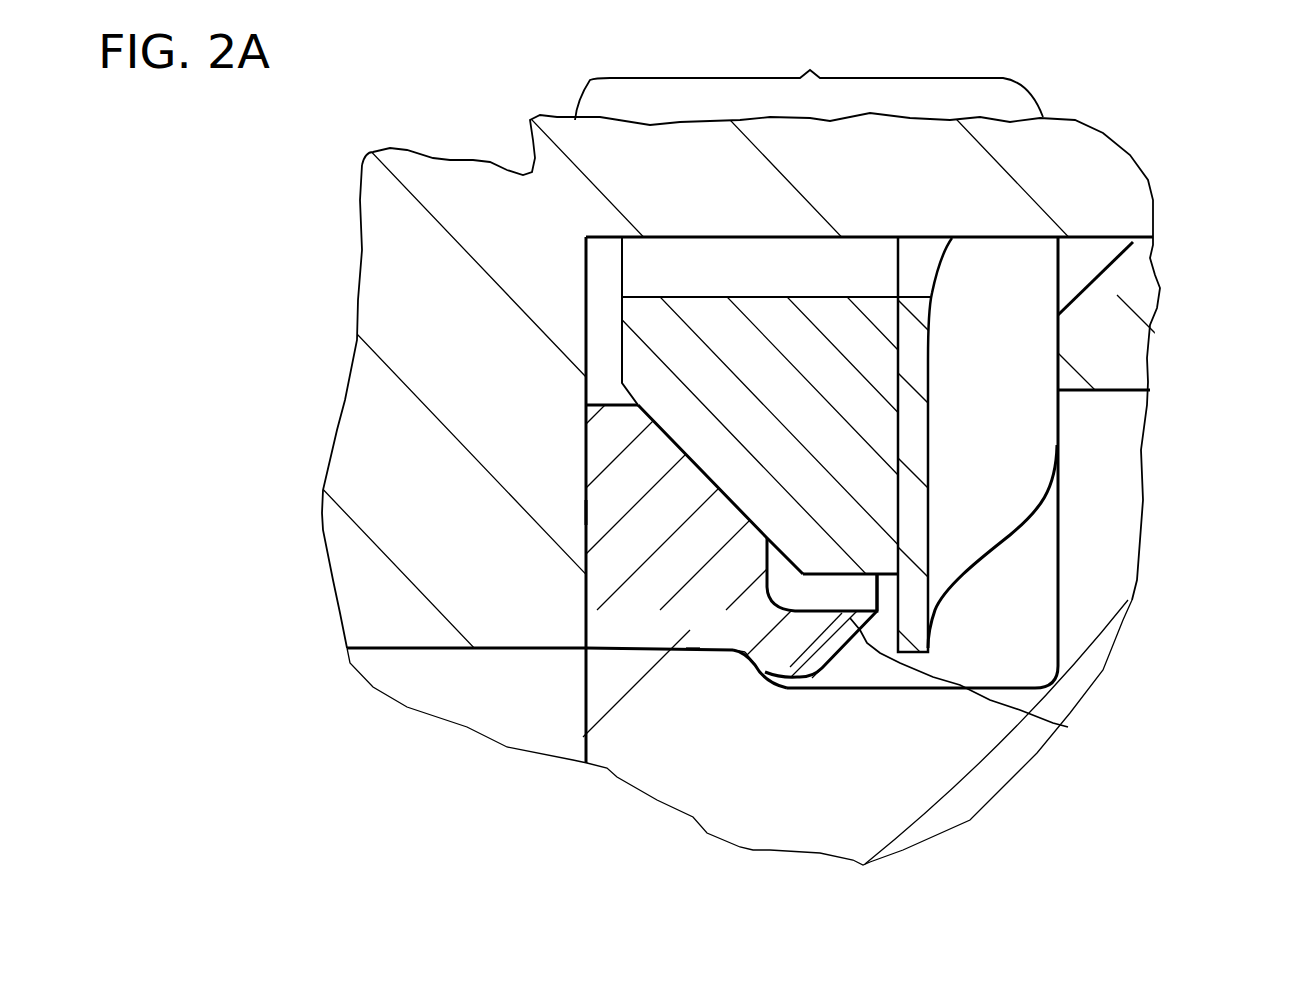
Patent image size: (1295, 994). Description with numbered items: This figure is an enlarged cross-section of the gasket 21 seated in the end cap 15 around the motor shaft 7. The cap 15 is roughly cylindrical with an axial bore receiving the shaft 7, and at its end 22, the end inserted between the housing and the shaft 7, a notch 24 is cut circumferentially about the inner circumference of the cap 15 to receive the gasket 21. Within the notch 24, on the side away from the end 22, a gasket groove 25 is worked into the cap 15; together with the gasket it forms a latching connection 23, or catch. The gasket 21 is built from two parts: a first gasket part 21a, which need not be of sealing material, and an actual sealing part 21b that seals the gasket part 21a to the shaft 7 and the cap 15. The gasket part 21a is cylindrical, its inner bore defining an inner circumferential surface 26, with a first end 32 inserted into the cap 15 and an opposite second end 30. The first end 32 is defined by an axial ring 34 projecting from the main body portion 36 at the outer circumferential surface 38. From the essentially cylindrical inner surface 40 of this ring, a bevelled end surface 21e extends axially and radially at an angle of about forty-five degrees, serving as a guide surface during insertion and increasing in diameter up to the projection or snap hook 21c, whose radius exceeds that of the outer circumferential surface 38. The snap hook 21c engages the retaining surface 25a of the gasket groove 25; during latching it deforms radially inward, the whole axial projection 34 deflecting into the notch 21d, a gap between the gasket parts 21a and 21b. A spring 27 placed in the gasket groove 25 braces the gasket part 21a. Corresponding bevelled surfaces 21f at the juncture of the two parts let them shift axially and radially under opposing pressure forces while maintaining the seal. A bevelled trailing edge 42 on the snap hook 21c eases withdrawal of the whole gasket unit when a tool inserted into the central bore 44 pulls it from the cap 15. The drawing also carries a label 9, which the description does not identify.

The shaft 7 is at (1130, 193).
The shaft member 9 is at (1130, 335).
The cap 15 is at (1003, 745).
The gasket 21 is at (585, 764).
The first gasket part 21a is at (627, 462).
The sealing part 21b is at (680, 353).
The snap hook 21c is at (810, 650).
The notch 21d is at (862, 603).
The bevelled end surface 21e is at (703, 820).
The bevelled surfaces 21f is at (702, 471).
The end of the cap 22 is at (575, 652).
The latching connection 23 is at (763, 664).
The notch 24 is at (809, 72).
The gasket groove 25 is at (1040, 673).
The retaining surface 25a is at (690, 640).
The inner circumferential surface 26 is at (605, 404).
The spring 27 is at (1027, 447).
The second end 30 is at (583, 513).
The first end 32 is at (877, 587).
The axial ring 34 is at (805, 630).
The main body portion 36 is at (652, 585).
The outer circumferential surface 38 is at (741, 661).
The inner surface 40 is at (825, 611).
The trailing edge 42 is at (802, 632).
The central bore 44 is at (643, 260).